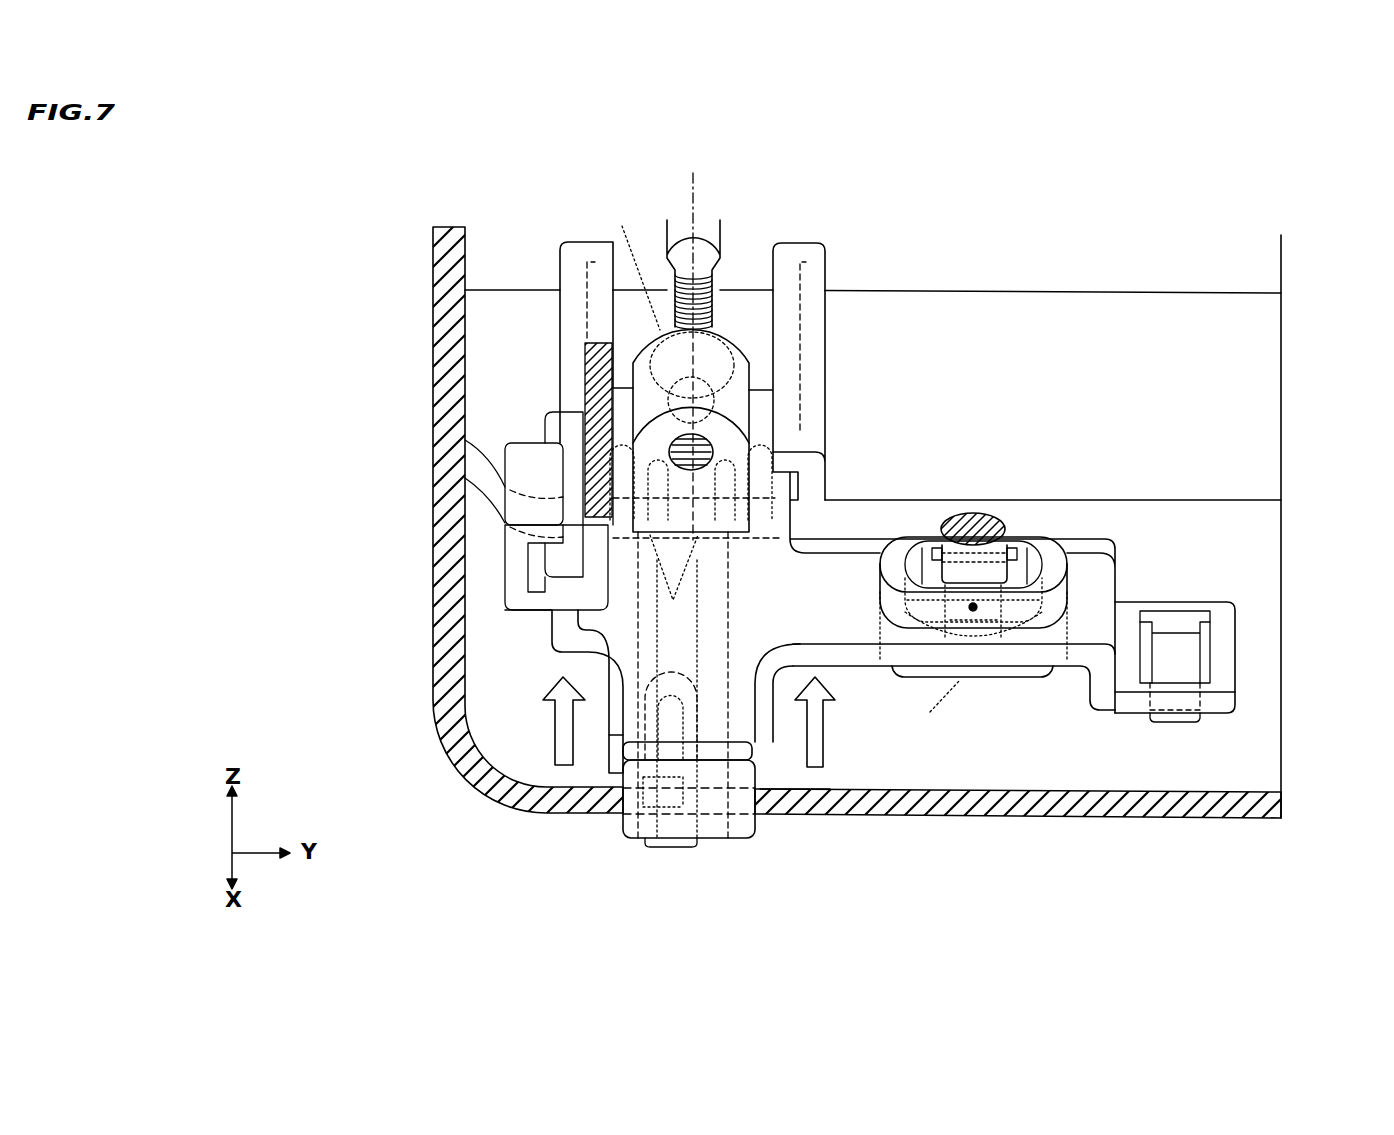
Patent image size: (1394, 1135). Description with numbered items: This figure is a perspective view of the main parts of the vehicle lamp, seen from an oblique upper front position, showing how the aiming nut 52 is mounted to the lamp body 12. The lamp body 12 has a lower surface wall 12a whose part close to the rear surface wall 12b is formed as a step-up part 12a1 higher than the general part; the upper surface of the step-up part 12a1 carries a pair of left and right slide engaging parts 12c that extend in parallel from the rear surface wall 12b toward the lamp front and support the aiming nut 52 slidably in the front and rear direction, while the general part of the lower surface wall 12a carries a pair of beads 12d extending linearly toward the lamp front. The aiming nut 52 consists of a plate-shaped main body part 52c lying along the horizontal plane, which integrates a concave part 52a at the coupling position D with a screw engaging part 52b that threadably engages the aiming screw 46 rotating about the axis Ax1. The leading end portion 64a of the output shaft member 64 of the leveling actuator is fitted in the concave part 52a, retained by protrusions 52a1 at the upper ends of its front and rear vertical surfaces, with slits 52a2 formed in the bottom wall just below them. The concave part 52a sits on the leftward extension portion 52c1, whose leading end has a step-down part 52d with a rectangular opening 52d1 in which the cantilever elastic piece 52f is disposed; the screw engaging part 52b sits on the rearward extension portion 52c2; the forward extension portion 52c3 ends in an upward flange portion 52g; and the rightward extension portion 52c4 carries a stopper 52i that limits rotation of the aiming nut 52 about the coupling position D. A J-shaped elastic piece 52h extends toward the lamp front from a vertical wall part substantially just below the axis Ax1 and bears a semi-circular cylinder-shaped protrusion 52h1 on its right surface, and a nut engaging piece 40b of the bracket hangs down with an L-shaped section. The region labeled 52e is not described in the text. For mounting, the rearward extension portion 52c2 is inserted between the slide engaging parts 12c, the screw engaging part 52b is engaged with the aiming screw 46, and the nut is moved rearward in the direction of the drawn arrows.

The lamp body 12 is at (433, 525).
The lower surface wall 12a is at (1256, 670).
The step-up part 12a1 is at (1247, 456).
The rear surface wall 12b is at (1212, 262).
The slide engaging part 12c is at (577, 250).
The bead 12d is at (615, 708).
The nut engaging piece 40b is at (555, 592).
The aiming screw 46 is at (715, 313).
The aiming nut 52 is at (1096, 554).
The concave part 52a is at (1050, 560).
The protrusion 52a1 is at (935, 590).
The slit 52a2 is at (628, 227).
The screw engaging part 52b is at (745, 392).
The plate-shaped main body part 52c is at (805, 580).
The leftward extension portion 52c1 is at (863, 570).
The rearward extension portion 52c2 is at (762, 420).
The forward extension portion 52c3 is at (735, 700).
The rightward extension portion 52c4 is at (600, 620).
The step-down part 52d is at (1220, 612).
The opening 52d1 is at (1180, 645).
The column portion 52e is at (683, 686).
The elastic piece 52f is at (1165, 666).
The flange portion 52g is at (710, 800).
The elastic piece 52h is at (667, 682).
The protrusion 52h1 is at (645, 765).
The stopper 52i is at (523, 468).
The output shaft member 64 is at (1003, 548).
The leading end portion 64a is at (995, 680).
The axis Ax1 is at (693, 185).
The coupling position D is at (973, 607).